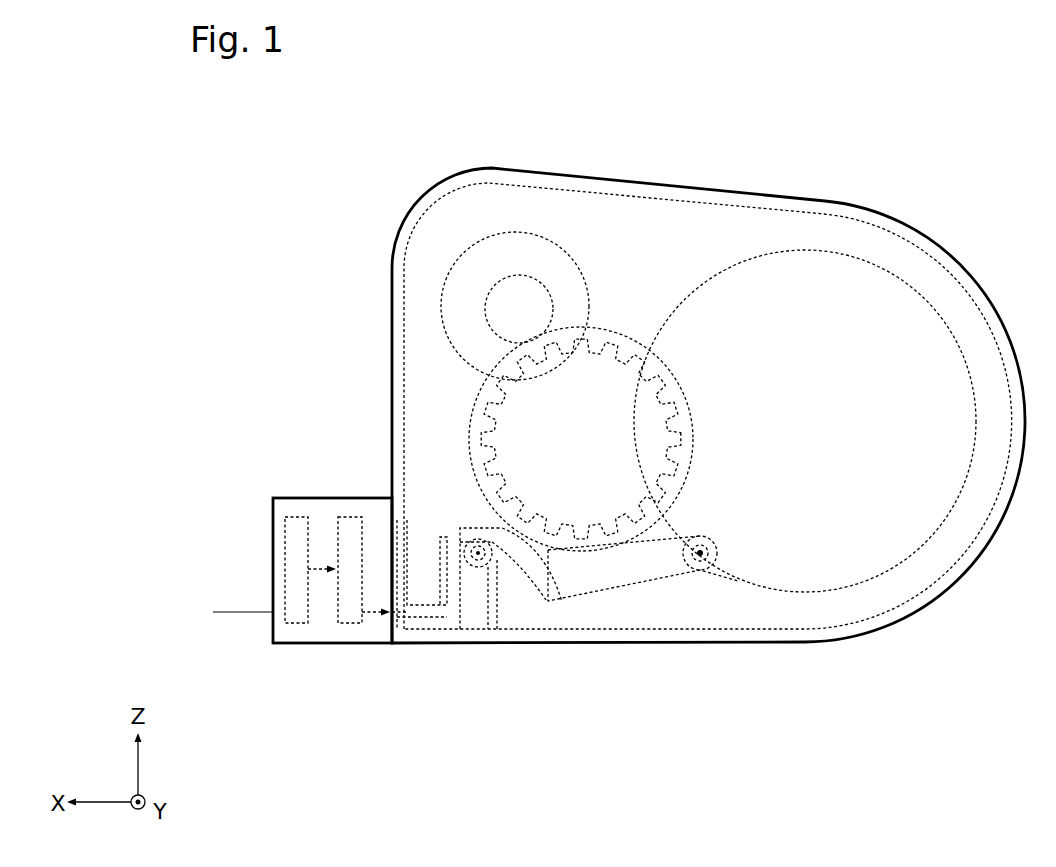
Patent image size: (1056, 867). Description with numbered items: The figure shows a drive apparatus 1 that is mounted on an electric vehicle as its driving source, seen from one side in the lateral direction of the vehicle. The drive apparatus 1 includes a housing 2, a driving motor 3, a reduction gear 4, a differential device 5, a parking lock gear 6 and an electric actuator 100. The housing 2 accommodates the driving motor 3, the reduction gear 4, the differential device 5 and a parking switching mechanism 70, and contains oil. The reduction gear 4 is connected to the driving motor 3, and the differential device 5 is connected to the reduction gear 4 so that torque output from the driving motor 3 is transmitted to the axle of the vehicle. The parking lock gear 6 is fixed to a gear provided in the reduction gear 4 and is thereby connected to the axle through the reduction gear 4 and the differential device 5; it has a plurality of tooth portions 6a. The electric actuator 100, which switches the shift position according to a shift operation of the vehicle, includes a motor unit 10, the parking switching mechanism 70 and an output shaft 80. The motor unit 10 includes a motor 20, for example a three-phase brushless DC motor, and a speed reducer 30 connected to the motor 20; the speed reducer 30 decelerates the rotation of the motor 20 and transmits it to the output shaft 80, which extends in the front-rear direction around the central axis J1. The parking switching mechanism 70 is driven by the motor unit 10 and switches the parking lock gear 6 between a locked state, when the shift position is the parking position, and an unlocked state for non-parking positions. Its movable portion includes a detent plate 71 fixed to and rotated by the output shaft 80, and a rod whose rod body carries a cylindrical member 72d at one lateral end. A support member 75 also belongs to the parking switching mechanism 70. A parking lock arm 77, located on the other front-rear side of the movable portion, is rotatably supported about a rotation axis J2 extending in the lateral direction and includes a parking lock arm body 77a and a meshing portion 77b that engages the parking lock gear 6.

The drive apparatus 1 is at (945, 196).
The housing 2 is at (791, 198).
The driving motor 3 is at (503, 231).
The reduction gear 4 is at (565, 312).
The differential device 5 is at (942, 320).
The parking lock gear 6 is at (605, 342).
The tooth portions 6a is at (662, 380).
The motor unit 10 is at (328, 564).
The motor 20 is at (289, 623).
The speed reducer 30 is at (352, 517).
The parking switching mechanism 70 is at (484, 627).
The detent plate 71 is at (455, 600).
The cylindrical member 72d is at (513, 606).
The support member 75 is at (477, 604).
The parking lock arm 77 is at (615, 624).
The parking lock arm body 77a is at (605, 578).
The meshing portion 77b is at (543, 567).
The output shaft 80 is at (425, 602).
The electric actuator 100 is at (264, 633).
The central axis J1 is at (212, 612).
The rotation axis J2 is at (700, 568).